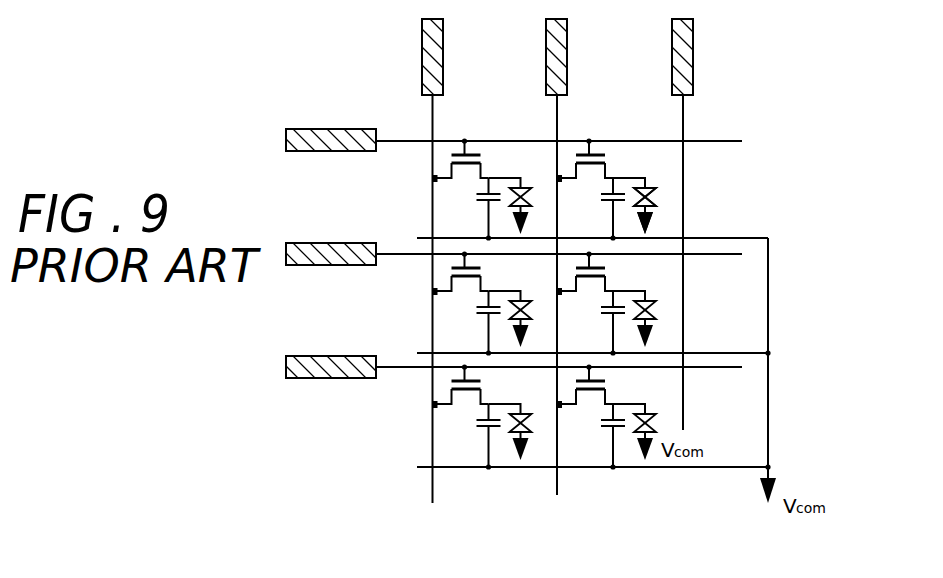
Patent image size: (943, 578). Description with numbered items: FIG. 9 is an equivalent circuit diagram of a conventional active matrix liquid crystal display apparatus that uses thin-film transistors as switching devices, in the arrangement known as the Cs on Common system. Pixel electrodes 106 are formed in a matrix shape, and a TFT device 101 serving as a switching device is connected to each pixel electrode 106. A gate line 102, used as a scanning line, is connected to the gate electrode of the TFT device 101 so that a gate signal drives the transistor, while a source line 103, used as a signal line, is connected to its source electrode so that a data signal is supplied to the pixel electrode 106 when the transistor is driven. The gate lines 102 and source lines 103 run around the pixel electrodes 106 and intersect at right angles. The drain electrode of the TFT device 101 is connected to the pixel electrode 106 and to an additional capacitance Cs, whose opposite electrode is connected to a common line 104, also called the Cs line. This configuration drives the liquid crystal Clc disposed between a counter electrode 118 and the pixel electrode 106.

The TFT device 101 is at (467, 142).
The gate line 102 is at (706, 139).
The source line 103 is at (560, 124).
The common line 104 is at (588, 468).
The pixel electrode 106 is at (648, 188).
The counter electrode 118 is at (654, 206).
The additional capacitance Cs is at (475, 199).
The liquid crystal Clc is at (658, 195).